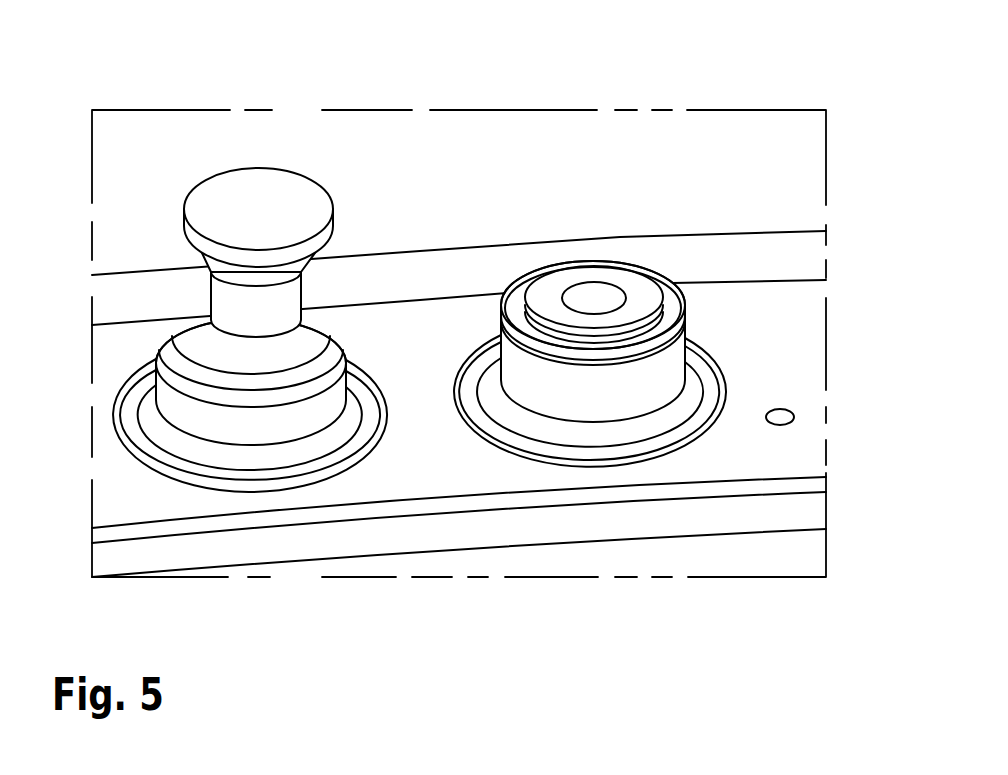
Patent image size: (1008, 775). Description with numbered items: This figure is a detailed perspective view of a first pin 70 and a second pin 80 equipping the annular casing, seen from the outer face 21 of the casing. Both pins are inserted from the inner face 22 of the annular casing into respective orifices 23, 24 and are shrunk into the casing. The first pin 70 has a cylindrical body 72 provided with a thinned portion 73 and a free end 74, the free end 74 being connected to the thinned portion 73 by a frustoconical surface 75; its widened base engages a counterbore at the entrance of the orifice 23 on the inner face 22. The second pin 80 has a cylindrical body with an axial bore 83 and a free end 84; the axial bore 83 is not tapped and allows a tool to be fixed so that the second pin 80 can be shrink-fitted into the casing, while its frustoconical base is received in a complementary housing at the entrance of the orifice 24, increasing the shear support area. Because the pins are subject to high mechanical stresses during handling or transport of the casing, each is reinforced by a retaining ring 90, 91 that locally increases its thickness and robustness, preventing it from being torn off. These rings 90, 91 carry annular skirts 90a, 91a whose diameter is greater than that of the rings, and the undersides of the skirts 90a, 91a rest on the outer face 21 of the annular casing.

The outer face 21 is at (746, 338).
The inner face 22 is at (675, 540).
The orifice 23 is at (376, 397).
The orifice 24 is at (711, 395).
The first pin 70 is at (163, 183).
The cylindrical body 72 is at (190, 362).
The thinned portion 73 is at (217, 284).
The free end 74 is at (248, 213).
The frustoconical surface 75 is at (287, 274).
The second pin 80 is at (623, 214).
The axial bore 83 is at (585, 297).
The free end 84 is at (638, 305).
The retaining ring 90 is at (228, 420).
The annular skirt 90a is at (272, 450).
The retaining ring 91 is at (632, 388).
The annular skirt 91a is at (603, 430).